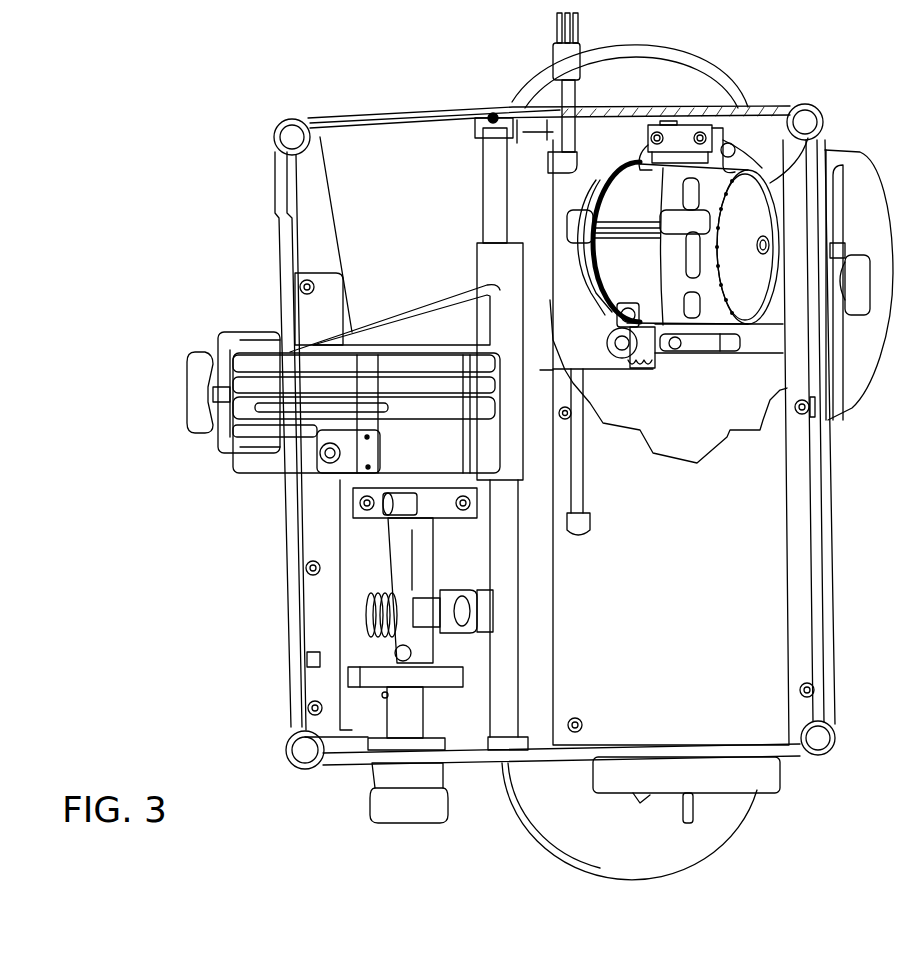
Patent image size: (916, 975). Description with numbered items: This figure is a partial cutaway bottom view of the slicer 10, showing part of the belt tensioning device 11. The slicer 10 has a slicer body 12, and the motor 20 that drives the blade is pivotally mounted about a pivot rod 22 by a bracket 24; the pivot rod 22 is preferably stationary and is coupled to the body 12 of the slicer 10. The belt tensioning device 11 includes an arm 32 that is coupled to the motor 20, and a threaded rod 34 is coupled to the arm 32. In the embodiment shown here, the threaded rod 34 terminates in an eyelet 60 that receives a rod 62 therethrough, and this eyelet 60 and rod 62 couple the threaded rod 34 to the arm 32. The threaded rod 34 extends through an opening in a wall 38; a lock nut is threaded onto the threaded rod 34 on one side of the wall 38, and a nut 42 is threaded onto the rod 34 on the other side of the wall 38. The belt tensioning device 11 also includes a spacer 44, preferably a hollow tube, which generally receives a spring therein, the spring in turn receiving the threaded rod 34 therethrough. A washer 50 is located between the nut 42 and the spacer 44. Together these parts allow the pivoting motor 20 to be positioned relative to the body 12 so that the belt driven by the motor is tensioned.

The slicer 10 is at (170, 206).
The belt tensioning device 11 is at (665, 393).
The slicer body 12 is at (773, 555).
The motor 20 is at (822, 143).
The pivot rod 22 is at (745, 112).
The bracket 24 is at (648, 145).
The arm 32 is at (723, 350).
The threaded rod 34 is at (603, 320).
The wall 38 is at (632, 307).
The nut 42 is at (612, 347).
The spacer 44 is at (670, 355).
The washer 50 is at (625, 368).
The eyelet 60 is at (660, 300).
The rod 62 is at (735, 314).